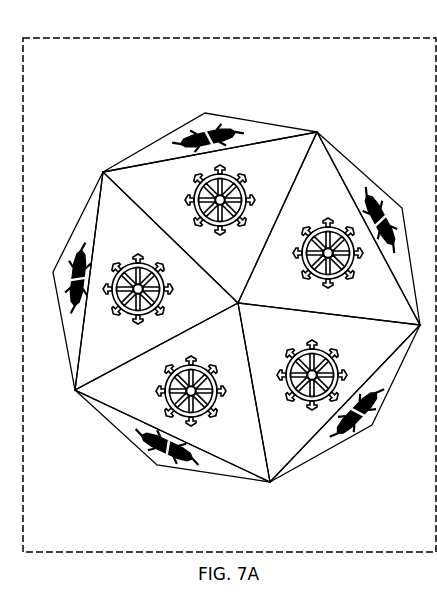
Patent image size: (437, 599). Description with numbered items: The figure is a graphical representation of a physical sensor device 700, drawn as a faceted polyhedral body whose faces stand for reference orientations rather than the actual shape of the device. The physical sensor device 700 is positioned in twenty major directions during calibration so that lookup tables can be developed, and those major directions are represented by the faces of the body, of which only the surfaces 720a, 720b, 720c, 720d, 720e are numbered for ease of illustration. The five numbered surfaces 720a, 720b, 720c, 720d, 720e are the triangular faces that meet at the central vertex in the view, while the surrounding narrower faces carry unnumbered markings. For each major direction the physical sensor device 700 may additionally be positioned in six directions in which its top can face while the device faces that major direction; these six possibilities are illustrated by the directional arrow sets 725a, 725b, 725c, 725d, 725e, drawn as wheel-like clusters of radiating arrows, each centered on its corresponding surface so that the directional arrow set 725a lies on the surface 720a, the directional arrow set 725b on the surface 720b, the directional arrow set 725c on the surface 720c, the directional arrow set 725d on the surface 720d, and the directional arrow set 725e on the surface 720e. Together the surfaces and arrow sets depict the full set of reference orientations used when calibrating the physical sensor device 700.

The physical sensor device 700 is at (258, 121).
The surface 720a is at (300, 147).
The surface 720b is at (98, 185).
The surface 720c is at (108, 395).
The surface 720d is at (277, 468).
The surface 720e is at (328, 172).
The directional arrow set 725a is at (235, 223).
The directional arrow set 725b is at (173, 297).
The directional arrow set 725c is at (192, 367).
The directional arrow set 725d is at (287, 360).
The directional arrow set 725e is at (313, 280).